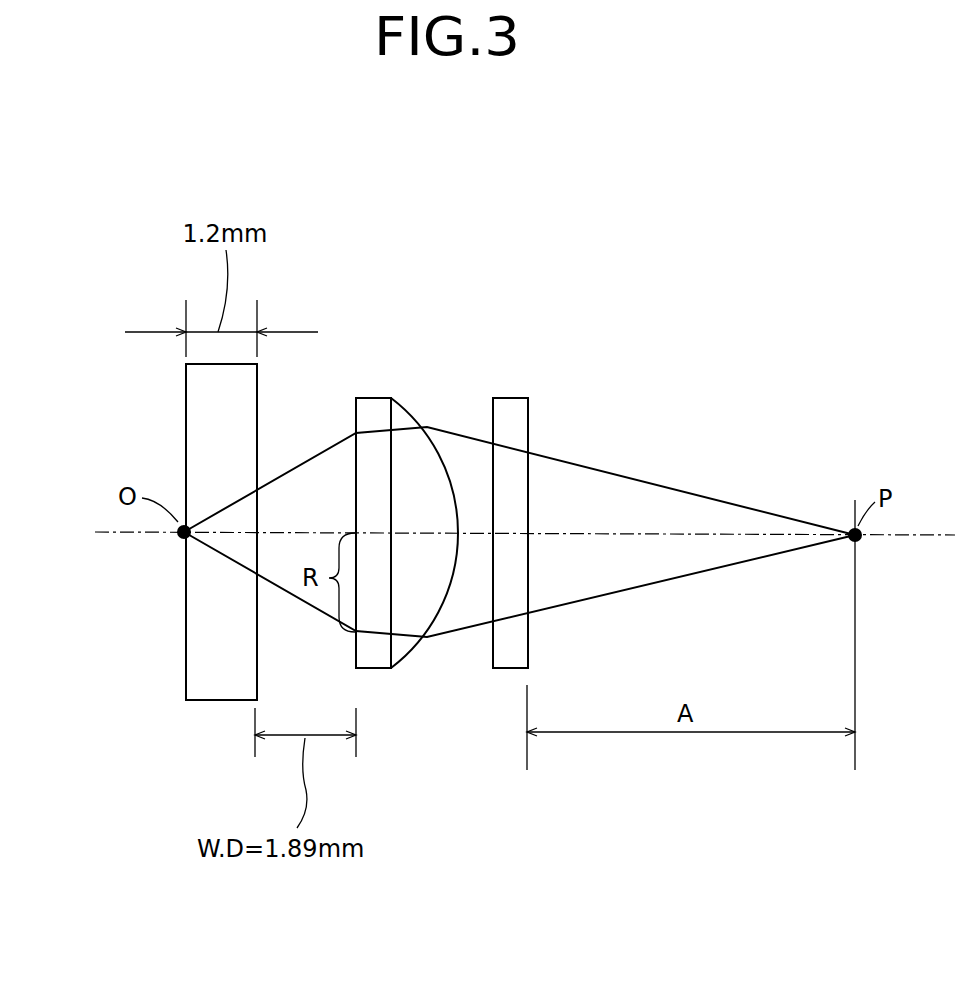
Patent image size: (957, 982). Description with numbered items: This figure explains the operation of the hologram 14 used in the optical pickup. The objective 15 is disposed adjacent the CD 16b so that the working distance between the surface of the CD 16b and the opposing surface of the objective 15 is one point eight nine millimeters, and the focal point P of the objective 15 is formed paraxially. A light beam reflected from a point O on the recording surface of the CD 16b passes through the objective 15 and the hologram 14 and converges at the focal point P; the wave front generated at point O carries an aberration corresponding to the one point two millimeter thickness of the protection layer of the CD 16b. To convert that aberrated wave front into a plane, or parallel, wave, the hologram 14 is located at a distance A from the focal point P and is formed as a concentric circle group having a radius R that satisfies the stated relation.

The CD 16b is at (182, 650).
The objective 15 is at (377, 398).
The hologram 14 is at (518, 398).